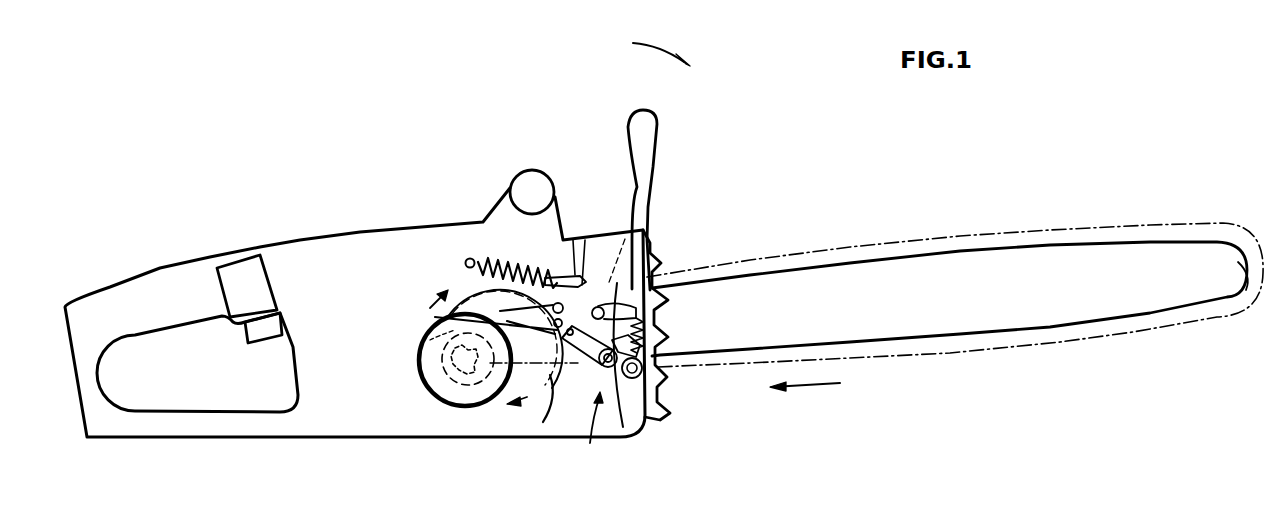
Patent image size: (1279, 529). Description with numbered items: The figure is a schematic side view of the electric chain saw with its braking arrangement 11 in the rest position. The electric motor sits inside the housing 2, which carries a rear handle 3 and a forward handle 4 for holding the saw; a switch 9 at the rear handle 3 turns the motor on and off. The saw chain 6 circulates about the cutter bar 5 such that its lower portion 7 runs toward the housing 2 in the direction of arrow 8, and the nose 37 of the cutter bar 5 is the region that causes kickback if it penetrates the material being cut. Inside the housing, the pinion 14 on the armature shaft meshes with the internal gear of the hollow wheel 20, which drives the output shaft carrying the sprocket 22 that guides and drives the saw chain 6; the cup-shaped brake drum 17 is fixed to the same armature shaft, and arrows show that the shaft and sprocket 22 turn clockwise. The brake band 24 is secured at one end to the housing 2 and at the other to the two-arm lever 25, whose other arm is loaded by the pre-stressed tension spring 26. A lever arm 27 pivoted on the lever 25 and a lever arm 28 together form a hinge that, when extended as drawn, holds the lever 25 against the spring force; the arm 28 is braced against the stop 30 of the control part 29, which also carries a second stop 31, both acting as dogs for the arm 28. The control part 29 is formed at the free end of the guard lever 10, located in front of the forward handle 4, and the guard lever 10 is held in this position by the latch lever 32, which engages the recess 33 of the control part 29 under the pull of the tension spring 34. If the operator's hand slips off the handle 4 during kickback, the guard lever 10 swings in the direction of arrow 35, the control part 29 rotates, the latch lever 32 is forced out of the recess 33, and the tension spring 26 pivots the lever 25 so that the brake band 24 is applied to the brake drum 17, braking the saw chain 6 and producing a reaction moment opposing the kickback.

The housing 2 is at (277, 258).
The rear handle 3 is at (120, 290).
The forward handle 4 is at (526, 186).
The cutter bar 5 is at (948, 270).
The saw chain 6 is at (1018, 228).
The lower portion of the saw chain 7 is at (940, 345).
The arrow 8 is at (815, 388).
The switch 9 is at (253, 333).
The guard lever 10 is at (650, 137).
The braking arrangement 11 is at (594, 431).
The pinion 14 is at (433, 332).
The brake drum 17 is at (443, 392).
The hollow wheel 20 is at (460, 293).
The sprocket 22 is at (512, 340).
The brake band 24 is at (535, 280).
The lever 25 is at (573, 240).
The tension spring 26 is at (500, 258).
The lever arm 27 is at (530, 402).
The lever arm 28 is at (580, 307).
The control part 29 is at (620, 410).
The stop 30 is at (588, 362).
The stop 31 is at (660, 317).
The latch lever 32 is at (650, 257).
The recess 33 is at (634, 380).
The tension spring 34 is at (660, 332).
The arrow 35 is at (652, 43).
The nose 37 is at (1253, 277).